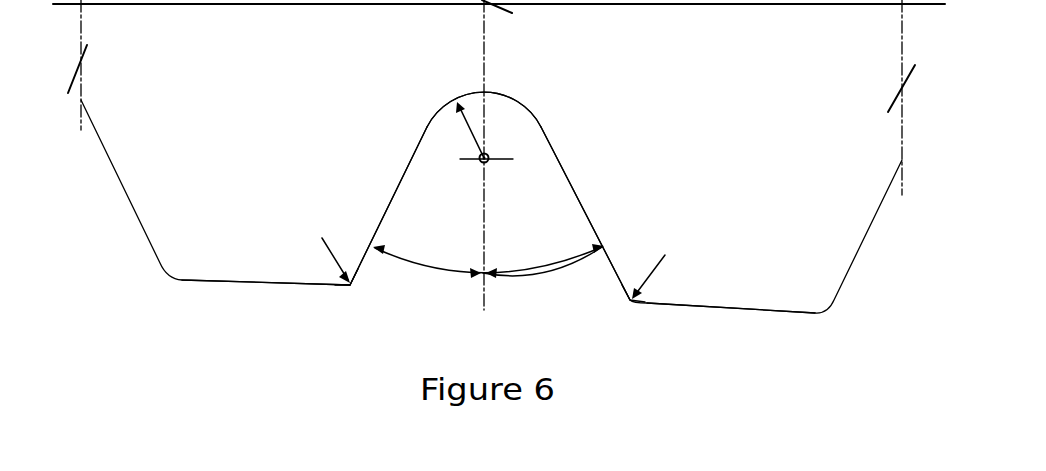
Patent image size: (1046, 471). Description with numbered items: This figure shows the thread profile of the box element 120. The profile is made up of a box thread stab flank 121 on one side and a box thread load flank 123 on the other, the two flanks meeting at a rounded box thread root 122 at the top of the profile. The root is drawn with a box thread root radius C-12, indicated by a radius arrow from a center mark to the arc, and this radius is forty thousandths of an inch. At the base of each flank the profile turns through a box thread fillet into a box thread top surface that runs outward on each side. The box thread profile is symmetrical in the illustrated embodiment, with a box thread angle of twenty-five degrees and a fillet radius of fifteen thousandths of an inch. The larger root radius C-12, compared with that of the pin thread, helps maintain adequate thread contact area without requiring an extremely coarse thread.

The box element 120 is at (205, 101).
The box thread stab flank 121 is at (563, 178).
The box thread root 122 is at (521, 98).
The box thread load flank 123 is at (405, 183).
The box thread root radius C-12 is at (470, 133).